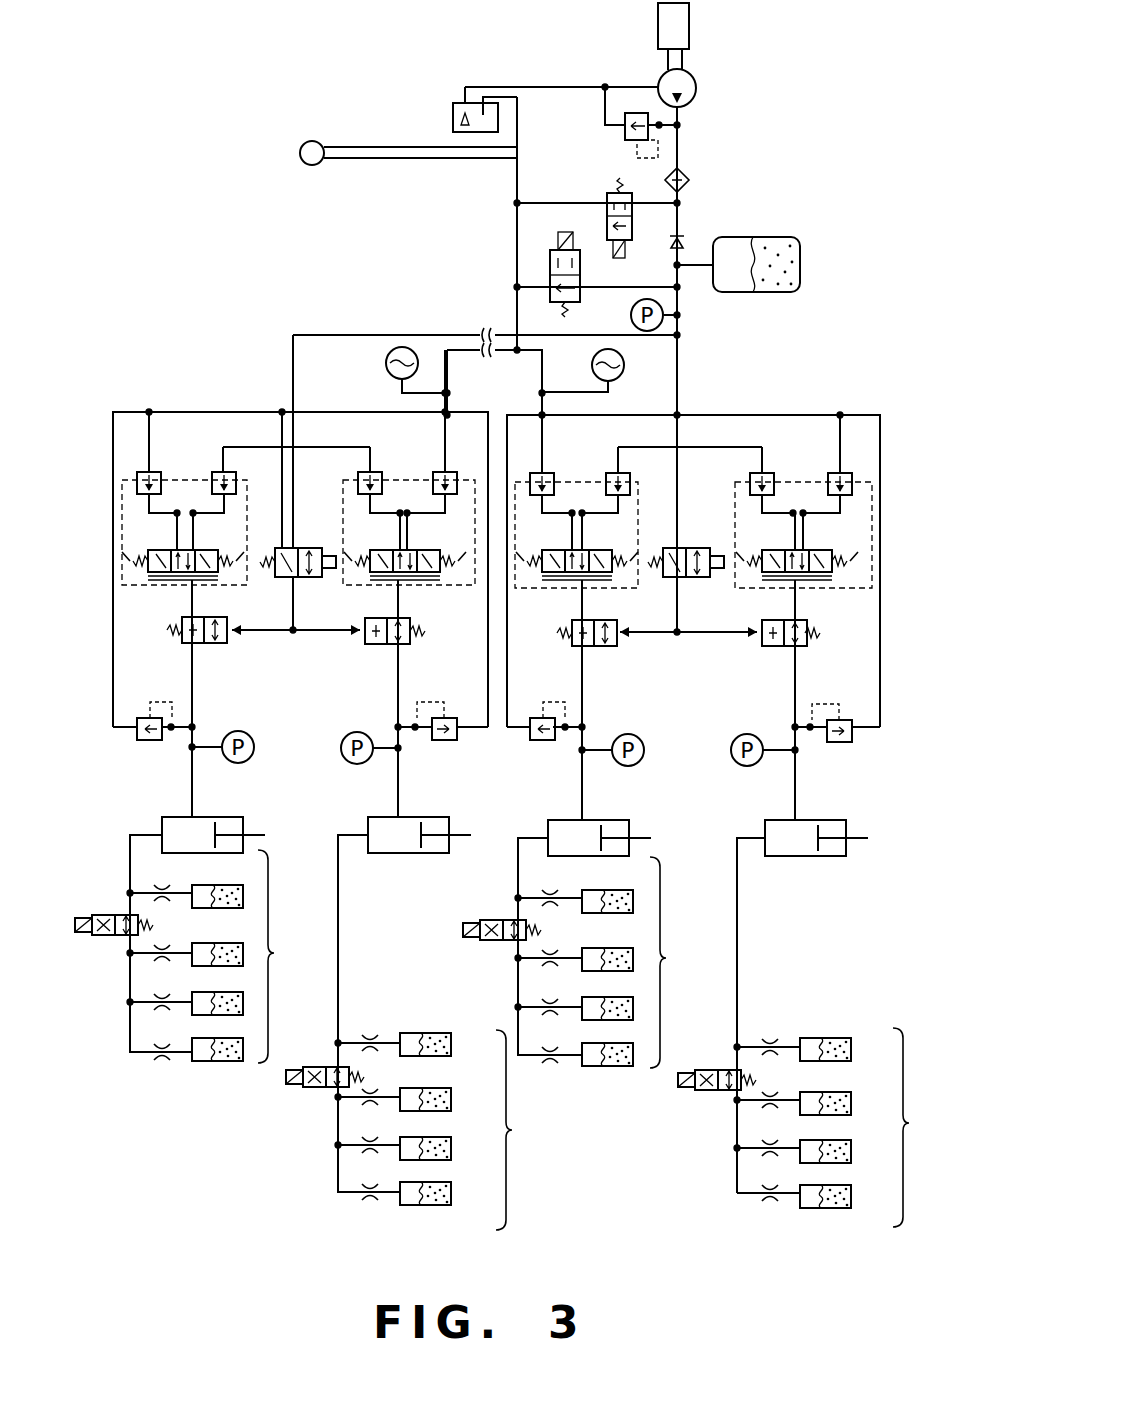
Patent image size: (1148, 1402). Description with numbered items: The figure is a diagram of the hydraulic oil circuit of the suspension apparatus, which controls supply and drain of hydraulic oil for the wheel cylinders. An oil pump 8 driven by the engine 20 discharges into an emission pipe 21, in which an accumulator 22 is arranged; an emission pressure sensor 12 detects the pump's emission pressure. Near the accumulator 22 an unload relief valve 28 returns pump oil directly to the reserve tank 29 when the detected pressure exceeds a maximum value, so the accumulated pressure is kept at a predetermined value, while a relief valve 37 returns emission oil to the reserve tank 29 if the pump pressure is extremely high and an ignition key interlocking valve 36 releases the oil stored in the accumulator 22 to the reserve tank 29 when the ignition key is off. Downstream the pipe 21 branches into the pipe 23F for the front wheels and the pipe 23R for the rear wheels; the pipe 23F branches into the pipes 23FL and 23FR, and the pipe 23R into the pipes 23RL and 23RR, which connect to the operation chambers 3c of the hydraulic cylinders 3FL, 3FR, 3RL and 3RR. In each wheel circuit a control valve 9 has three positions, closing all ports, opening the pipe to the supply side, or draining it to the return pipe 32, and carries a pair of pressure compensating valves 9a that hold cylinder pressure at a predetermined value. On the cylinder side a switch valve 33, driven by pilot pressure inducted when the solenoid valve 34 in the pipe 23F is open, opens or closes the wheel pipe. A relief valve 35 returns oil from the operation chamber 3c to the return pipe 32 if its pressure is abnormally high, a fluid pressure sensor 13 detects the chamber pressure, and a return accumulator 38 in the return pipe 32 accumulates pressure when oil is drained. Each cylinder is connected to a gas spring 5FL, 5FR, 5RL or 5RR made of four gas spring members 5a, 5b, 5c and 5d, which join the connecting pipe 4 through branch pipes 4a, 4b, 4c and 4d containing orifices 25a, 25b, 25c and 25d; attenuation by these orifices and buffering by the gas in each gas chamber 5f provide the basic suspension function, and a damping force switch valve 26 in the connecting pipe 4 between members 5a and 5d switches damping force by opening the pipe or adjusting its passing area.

The engine 20 is at (690, 32).
The oil pump 8 is at (660, 72).
The emission pipe 21 is at (680, 300).
The reserve tank 29 is at (450, 123).
The return pipe 32 is at (515, 204).
The relief valve 37 is at (625, 138).
The unload relief valve 28 is at (619, 183).
The ignition key interlocking valve 36 is at (555, 259).
The accumulator 22 is at (800, 250).
The emission pressure sensor 12 is at (631, 314).
The pipe for the rear wheel 23R is at (315, 330).
The pipe for the front wheel 23F is at (697, 377).
The return accumulator 38 is at (385, 366).
The pressure compensating valve 9a is at (163, 468).
The control valve 9 is at (228, 588).
The solenoid valve 34 is at (303, 579).
The switch valve 33 is at (183, 645).
The pipe for the rear right wheel 23RR is at (192, 700).
The pipe for the rear left wheel 23RL is at (398, 660).
The pipe for the front right wheel 23FR is at (582, 665).
The pipe for the front left wheel 23FL is at (795, 715).
The relief valve 35 is at (149, 740).
The fluid pressure sensor 13 is at (254, 746).
The operation chamber 3c is at (162, 819).
The rear right hydraulic cylinder 3RR is at (250, 812).
The rear left hydraulic cylinder 3RL is at (448, 814).
The front right hydraulic cylinder 3FR is at (635, 818).
The front left hydraulic cylinder 3FL is at (859, 822).
The connecting pipe 4 is at (118, 840).
The damping force switch valve 26 is at (84, 904).
The orifice 25a is at (160, 890).
The orifice 25b is at (164, 949).
The orifice 25c is at (163, 1000).
The orifice 25d is at (162, 1062).
The gas spring member 5a is at (247, 895).
The gas spring member 5b is at (252, 950).
The gas spring member 5c is at (254, 1007).
The gas spring member 5d is at (255, 1052).
The gas chamber 5f is at (831, 1037).
The rear right gas spring 5RR is at (296, 956).
The rear left gas spring 5RL is at (535, 1130).
The front right gas spring 5FR is at (690, 962).
The front left gas spring 5FL is at (926, 1127).
The branch pipe 4a is at (748, 1044).
The branch pipe 4b is at (750, 1102).
The branch pipe 4c is at (748, 1152).
The branch pipe 4d is at (744, 1196).